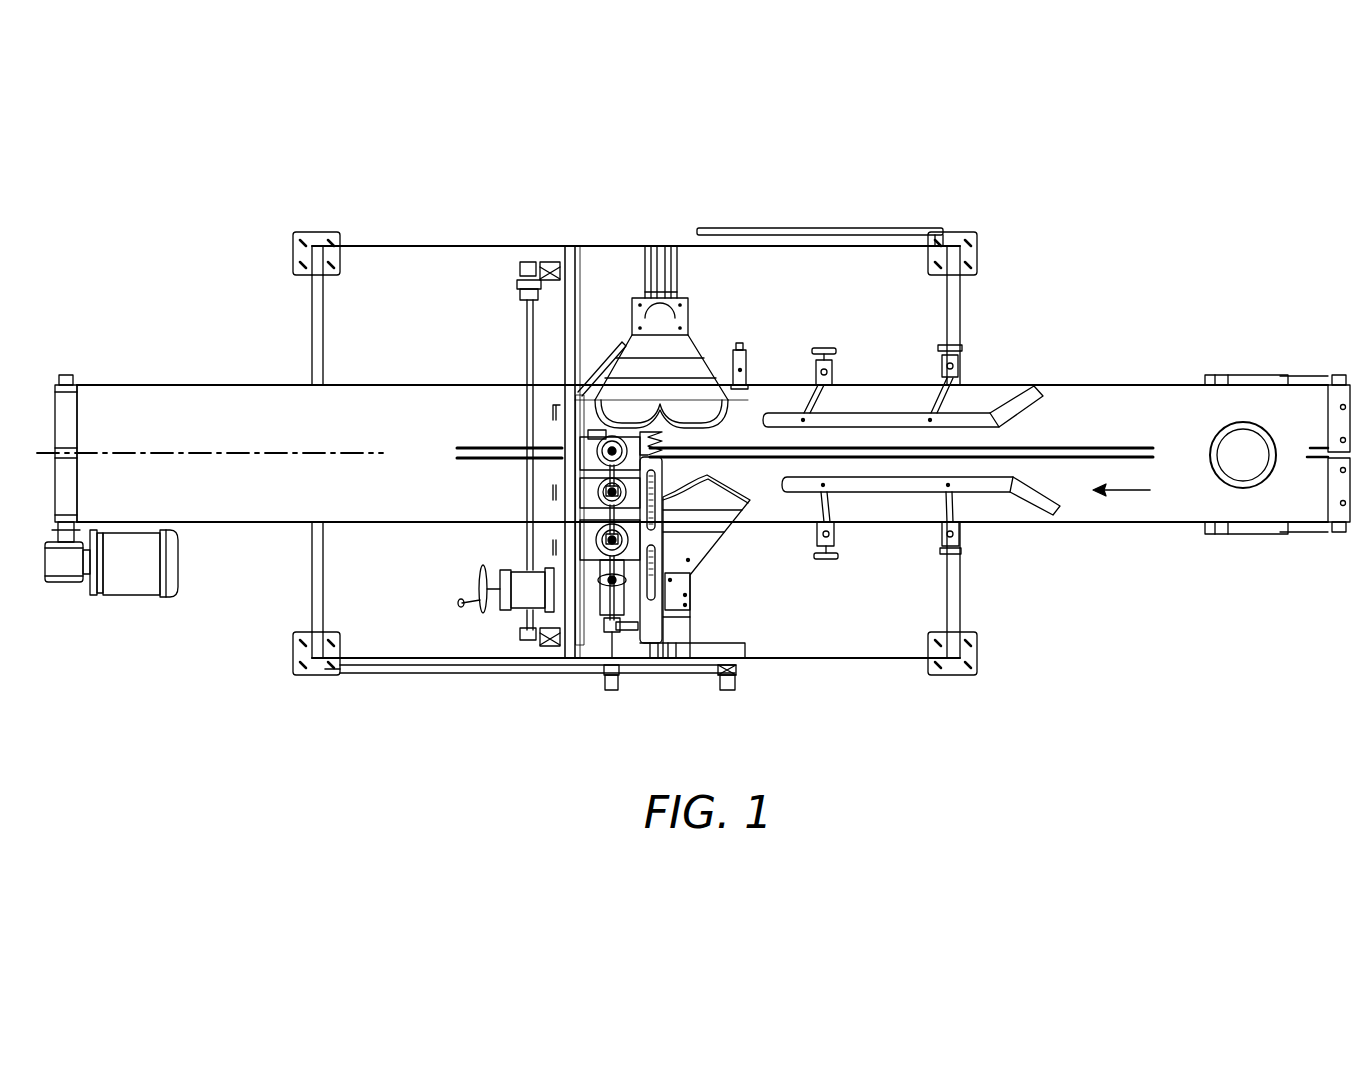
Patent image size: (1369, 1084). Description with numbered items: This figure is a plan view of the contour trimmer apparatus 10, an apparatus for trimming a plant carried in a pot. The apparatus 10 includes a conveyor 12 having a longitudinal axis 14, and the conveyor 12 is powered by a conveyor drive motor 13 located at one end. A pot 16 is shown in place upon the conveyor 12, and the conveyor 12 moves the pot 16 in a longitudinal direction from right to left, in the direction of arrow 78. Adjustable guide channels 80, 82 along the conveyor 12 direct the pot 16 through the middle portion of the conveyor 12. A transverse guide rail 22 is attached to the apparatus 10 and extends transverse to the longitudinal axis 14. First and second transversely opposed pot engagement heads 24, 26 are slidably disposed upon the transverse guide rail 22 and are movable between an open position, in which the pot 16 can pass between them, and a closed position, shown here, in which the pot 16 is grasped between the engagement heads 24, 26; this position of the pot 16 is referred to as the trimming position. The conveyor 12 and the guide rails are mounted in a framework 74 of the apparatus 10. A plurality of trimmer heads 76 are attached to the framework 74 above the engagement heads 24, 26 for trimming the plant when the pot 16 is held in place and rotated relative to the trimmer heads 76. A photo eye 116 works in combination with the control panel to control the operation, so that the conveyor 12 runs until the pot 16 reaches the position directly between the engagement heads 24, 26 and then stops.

The contour trimmer apparatus 10 is at (1196, 206).
The conveyor 12 is at (1134, 400).
The conveyor drive motor 13 is at (123, 570).
The longitudinal axis 14 is at (240, 452).
The pot 16 is at (1245, 423).
The transverse guide rail 22 is at (642, 292).
The first pot engagement head 24 is at (689, 357).
The second pot engagement head 26 is at (705, 540).
The framework 74 is at (895, 232).
The trimmer heads 76 is at (656, 442).
The arrow 78 is at (1130, 520).
The adjustable guide channel 80 is at (980, 413).
The adjustable guide channel 82 is at (985, 485).
The photo eye 116 is at (746, 362).